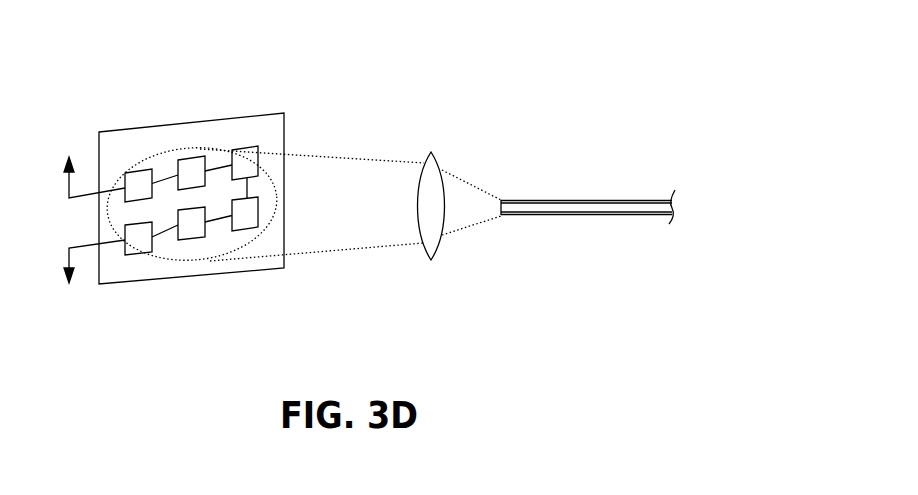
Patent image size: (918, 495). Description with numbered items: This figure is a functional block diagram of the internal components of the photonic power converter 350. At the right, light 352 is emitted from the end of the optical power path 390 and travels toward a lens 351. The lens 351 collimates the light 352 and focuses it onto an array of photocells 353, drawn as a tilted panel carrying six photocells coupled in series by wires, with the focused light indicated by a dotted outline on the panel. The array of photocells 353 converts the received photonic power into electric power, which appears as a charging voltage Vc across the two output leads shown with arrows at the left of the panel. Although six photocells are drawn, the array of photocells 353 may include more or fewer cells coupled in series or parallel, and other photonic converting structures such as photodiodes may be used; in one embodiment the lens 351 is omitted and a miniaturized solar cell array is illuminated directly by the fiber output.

The photonic power converter 350 is at (382, 148).
The array of photocells 353 is at (260, 115).
The lens 351 is at (431, 152).
The light 352 is at (462, 232).
The optical power path 390 is at (637, 200).